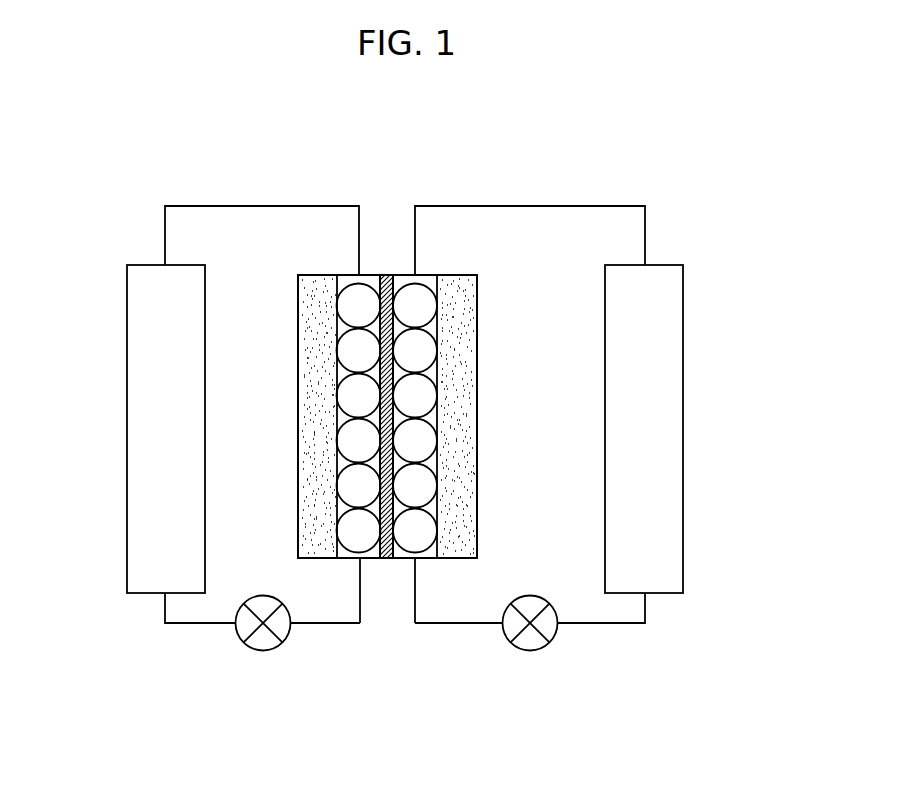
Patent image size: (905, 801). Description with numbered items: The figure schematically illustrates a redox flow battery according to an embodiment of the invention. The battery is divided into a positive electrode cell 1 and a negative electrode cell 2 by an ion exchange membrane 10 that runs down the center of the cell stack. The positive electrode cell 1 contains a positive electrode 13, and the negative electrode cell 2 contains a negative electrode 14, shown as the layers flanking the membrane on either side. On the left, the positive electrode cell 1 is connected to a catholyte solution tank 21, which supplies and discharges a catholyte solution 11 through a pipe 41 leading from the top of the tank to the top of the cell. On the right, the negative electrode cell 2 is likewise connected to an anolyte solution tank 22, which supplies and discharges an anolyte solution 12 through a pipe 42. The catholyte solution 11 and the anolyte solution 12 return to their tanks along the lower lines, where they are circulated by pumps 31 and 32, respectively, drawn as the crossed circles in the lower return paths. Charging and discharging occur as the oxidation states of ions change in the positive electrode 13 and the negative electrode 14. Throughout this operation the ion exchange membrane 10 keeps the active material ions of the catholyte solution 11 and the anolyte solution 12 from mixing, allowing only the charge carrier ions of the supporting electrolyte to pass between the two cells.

The positive electrode cell 1 is at (292, 308).
The negative electrode cell 2 is at (483, 311).
The ion exchange membrane 10 is at (389, 266).
The catholyte solution 11 is at (347, 558).
The anolyte solution 12 is at (428, 558).
The positive electrode 13 is at (320, 507).
The negative electrode 14 is at (460, 507).
The catholyte solution tank 21 is at (130, 330).
The anolyte solution tank 22 is at (683, 330).
The pump 31 is at (263, 651).
The pump 32 is at (530, 651).
The pipe 41 is at (268, 205).
The pipe 42 is at (530, 205).